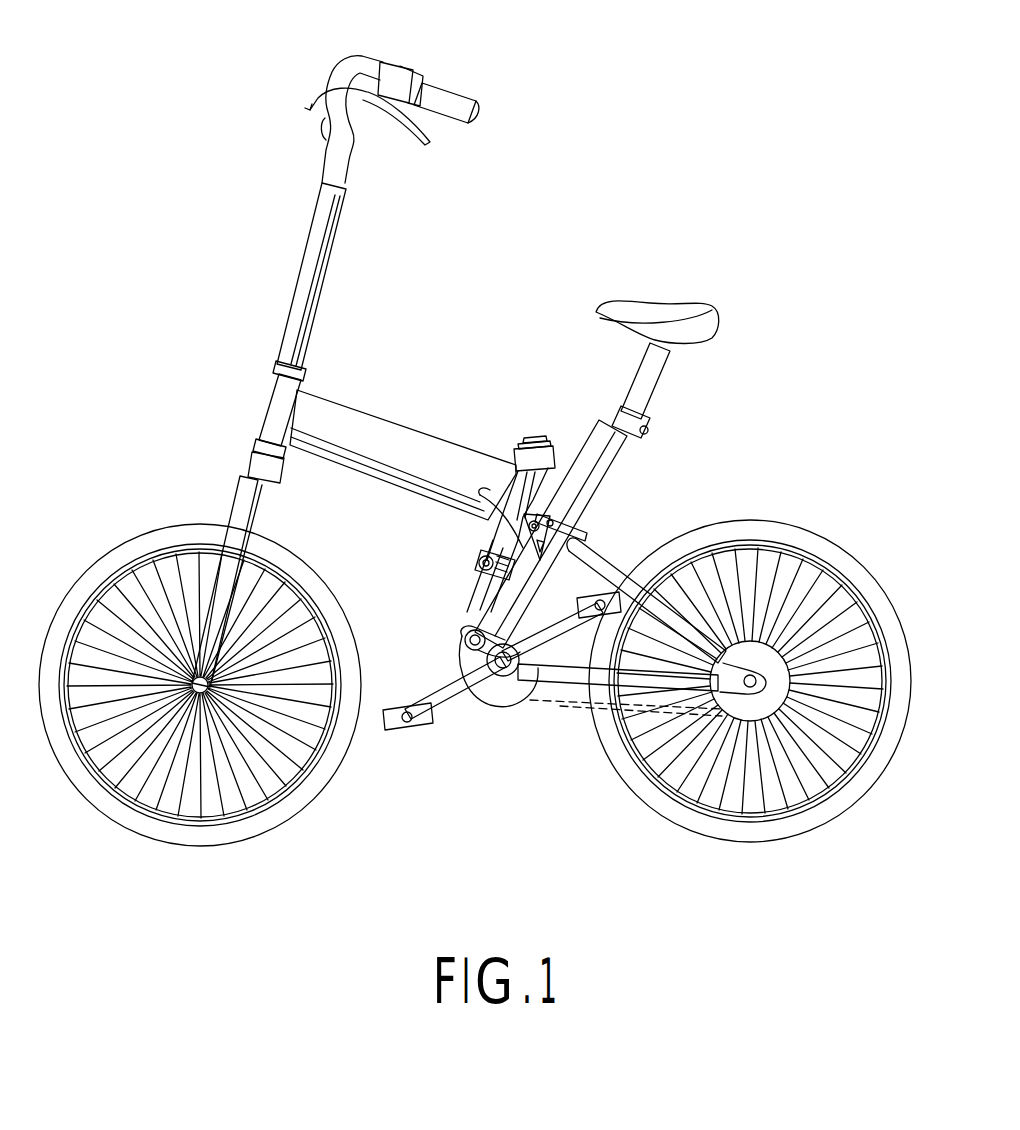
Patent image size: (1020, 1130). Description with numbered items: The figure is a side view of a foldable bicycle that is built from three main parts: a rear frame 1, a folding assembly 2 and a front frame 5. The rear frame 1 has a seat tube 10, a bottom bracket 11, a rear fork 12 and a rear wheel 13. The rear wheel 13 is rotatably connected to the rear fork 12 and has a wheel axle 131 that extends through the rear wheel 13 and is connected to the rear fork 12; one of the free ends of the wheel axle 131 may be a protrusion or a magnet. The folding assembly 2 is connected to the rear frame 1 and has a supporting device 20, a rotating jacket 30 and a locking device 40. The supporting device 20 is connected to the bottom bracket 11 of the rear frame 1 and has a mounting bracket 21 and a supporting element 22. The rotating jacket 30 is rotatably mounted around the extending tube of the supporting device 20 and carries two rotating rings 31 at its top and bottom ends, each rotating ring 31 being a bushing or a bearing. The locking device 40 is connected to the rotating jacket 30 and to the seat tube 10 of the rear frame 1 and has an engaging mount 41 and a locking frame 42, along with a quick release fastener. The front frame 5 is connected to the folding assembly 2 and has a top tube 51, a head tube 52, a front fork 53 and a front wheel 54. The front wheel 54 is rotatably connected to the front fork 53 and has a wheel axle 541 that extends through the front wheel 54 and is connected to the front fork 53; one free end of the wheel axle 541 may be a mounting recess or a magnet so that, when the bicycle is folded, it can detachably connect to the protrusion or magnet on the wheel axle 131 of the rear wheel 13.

The rear frame 1 is at (783, 510).
The folding assembly 2 is at (556, 378).
The front frame 5 is at (412, 358).
The seat tube 10 is at (628, 447).
The bottom bracket 11 is at (520, 685).
The rear fork 12 is at (586, 550).
The rear wheel 13 is at (843, 565).
The wheel axle 131 is at (750, 690).
The supporting device 20 is at (458, 629).
The mounting bracket 21 is at (470, 692).
The supporting element 22 is at (478, 600).
The rotating jacket 30 is at (505, 478).
The rotating ring 31 is at (487, 560).
The locking device 40 is at (550, 507).
The engaging mount 41 is at (517, 513).
The locking frame 42 is at (590, 508).
The top tube 51 is at (428, 447).
The head tube 52 is at (296, 312).
The front fork 53 is at (247, 503).
The front wheel 54 is at (180, 530).
The wheel axle 541 is at (320, 768).